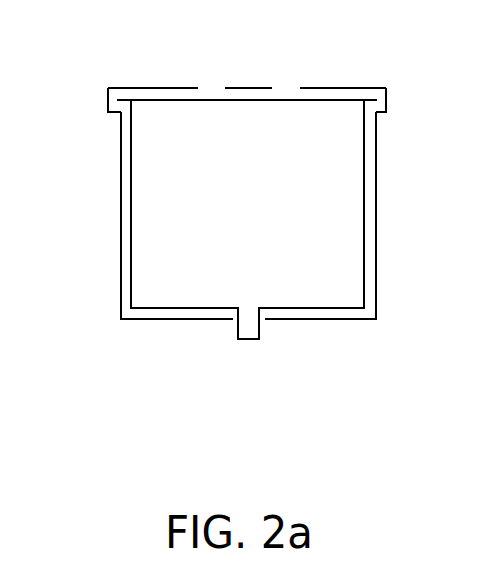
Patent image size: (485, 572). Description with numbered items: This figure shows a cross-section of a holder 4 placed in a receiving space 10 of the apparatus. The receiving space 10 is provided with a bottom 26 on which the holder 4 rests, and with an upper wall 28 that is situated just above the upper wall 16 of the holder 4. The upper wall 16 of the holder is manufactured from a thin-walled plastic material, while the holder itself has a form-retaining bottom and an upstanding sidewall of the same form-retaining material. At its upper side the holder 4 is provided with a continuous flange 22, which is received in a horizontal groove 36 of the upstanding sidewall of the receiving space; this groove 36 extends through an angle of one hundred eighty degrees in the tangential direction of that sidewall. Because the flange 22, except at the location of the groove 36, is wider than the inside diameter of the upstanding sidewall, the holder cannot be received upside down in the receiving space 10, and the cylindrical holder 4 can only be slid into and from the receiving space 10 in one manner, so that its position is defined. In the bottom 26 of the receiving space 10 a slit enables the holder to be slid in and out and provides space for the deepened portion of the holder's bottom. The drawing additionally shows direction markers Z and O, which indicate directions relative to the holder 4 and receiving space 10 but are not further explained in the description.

The holder 4 is at (365, 248).
The receiving space 10 is at (375, 180).
The upper wall 16 is at (163, 99).
The continuous flange 22 is at (372, 98).
The bottom 26 is at (316, 320).
The upper wall 28 is at (245, 88).
The horizontal groove 36 is at (387, 92).
The direction Z is at (103, 219).
The direction O is at (352, 398).